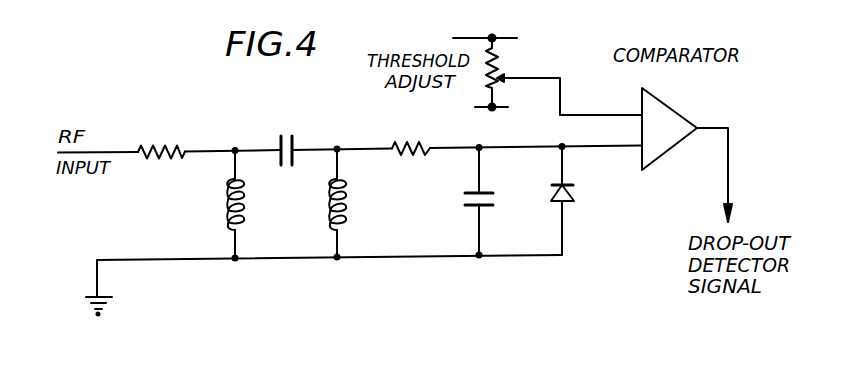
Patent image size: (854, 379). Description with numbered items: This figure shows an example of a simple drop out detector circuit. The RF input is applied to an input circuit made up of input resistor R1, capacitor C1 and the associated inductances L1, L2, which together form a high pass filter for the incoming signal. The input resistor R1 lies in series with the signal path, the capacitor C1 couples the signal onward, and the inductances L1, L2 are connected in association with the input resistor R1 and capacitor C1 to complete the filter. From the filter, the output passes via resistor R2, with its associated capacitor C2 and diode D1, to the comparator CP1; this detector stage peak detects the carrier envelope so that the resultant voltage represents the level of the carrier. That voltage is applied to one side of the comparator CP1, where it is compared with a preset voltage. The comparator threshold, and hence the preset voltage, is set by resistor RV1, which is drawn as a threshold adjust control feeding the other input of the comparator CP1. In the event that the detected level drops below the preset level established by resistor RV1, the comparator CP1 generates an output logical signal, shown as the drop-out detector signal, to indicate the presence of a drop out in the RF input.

The input resistor R1 is at (147, 143).
The resistor R2 is at (398, 142).
The capacitor C1 is at (292, 135).
The capacitor C2 is at (495, 202).
The inductance L1 is at (249, 205).
The inductance L2 is at (353, 203).
The diode D1 is at (577, 201).
The resistor RV1 is at (500, 73).
The comparator CP1 is at (672, 118).